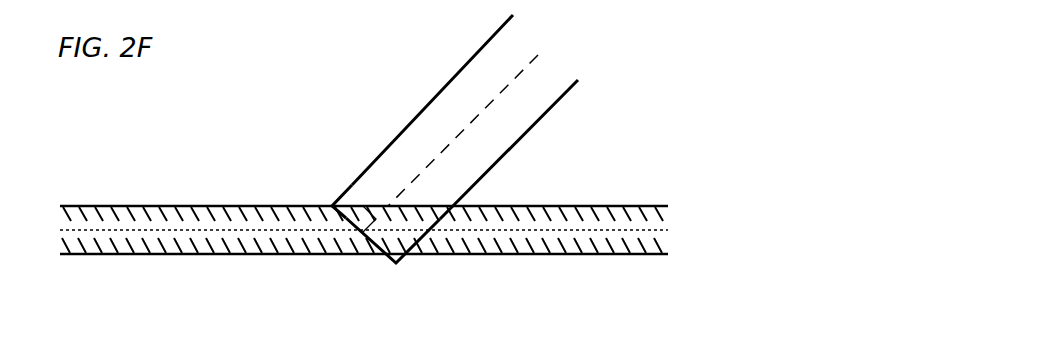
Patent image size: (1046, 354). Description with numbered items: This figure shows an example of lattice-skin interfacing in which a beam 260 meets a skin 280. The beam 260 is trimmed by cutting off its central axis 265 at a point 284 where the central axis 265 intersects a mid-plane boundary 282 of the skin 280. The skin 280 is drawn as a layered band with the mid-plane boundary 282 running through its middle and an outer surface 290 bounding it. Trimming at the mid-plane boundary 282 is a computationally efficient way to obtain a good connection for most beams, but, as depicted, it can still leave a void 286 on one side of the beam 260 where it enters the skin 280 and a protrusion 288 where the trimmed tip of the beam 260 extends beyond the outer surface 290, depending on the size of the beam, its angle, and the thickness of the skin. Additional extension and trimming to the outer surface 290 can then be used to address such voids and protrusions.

The beam 260 is at (406, 74).
The central axis 265 is at (542, 55).
The skin 280 is at (645, 270).
The mid-plane boundary 282 is at (668, 230).
The point 284 is at (363, 227).
The void 286 is at (322, 199).
The protrusion 288 is at (409, 265).
The outer surface 290 is at (535, 255).